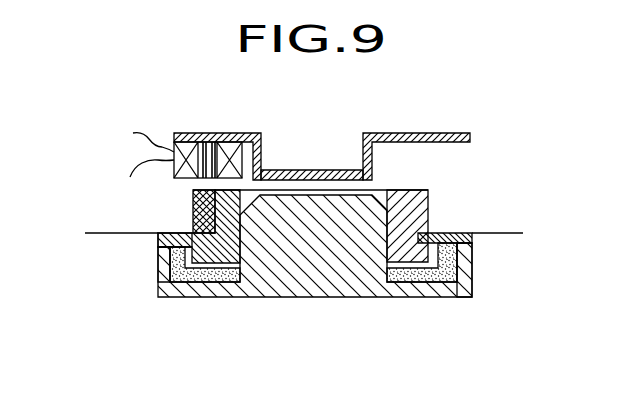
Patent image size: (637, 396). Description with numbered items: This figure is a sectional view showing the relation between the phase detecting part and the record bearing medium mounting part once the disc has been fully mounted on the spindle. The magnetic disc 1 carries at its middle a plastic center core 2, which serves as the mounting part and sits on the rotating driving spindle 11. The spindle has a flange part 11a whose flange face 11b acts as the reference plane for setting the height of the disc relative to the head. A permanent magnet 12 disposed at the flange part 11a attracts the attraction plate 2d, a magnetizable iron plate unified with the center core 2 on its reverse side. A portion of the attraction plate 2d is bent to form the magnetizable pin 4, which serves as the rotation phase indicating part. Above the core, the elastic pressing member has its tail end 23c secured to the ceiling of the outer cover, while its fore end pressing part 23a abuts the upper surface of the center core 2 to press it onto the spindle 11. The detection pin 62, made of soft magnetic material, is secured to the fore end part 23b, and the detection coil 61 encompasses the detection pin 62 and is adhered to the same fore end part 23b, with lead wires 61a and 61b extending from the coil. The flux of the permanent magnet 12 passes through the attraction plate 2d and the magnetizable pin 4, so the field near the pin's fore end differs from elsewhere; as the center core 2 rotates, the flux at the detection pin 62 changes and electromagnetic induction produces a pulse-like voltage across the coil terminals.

The magnetic disc 1 is at (483, 232).
The center core 2 is at (432, 205).
The attraction plate 2d is at (155, 237).
The magnetizable pin 4 is at (205, 214).
The driving spindle 11 is at (333, 270).
The flange part 11a is at (468, 282).
The flange face 11b is at (162, 252).
The permanent magnet 12 is at (470, 256).
The fore end pressing part 23a is at (312, 168).
The fore end part 23b is at (238, 137).
The tail end 23c is at (440, 133).
The detection coil 61 is at (185, 148).
The lead wire 61a is at (139, 140).
The lead wire 61b is at (139, 182).
The detection pin 62 is at (206, 145).